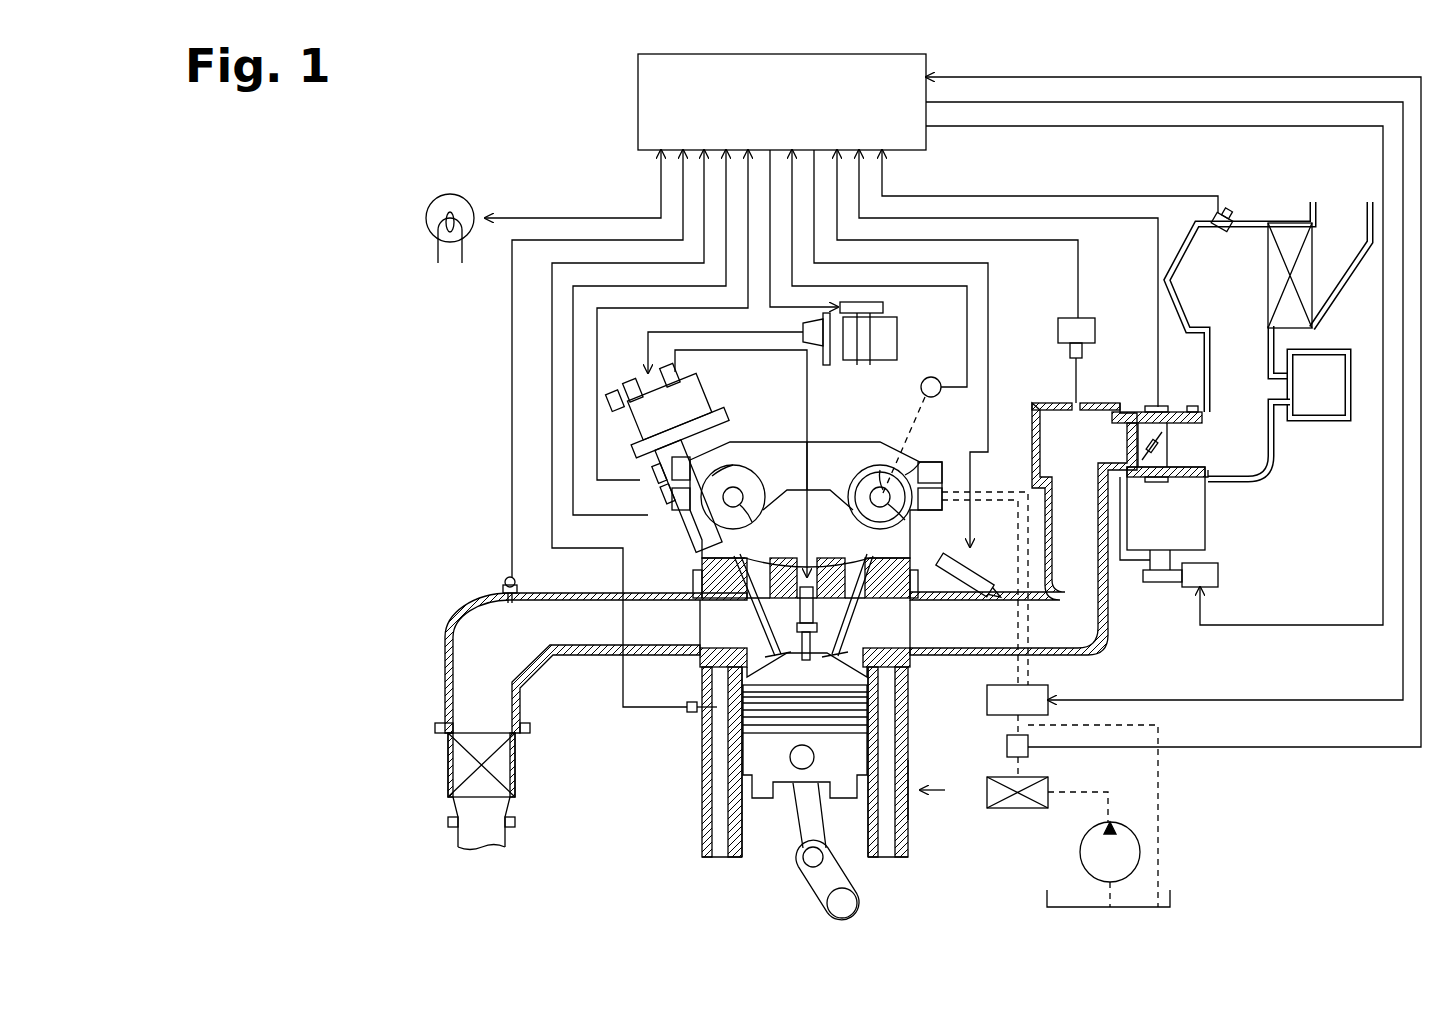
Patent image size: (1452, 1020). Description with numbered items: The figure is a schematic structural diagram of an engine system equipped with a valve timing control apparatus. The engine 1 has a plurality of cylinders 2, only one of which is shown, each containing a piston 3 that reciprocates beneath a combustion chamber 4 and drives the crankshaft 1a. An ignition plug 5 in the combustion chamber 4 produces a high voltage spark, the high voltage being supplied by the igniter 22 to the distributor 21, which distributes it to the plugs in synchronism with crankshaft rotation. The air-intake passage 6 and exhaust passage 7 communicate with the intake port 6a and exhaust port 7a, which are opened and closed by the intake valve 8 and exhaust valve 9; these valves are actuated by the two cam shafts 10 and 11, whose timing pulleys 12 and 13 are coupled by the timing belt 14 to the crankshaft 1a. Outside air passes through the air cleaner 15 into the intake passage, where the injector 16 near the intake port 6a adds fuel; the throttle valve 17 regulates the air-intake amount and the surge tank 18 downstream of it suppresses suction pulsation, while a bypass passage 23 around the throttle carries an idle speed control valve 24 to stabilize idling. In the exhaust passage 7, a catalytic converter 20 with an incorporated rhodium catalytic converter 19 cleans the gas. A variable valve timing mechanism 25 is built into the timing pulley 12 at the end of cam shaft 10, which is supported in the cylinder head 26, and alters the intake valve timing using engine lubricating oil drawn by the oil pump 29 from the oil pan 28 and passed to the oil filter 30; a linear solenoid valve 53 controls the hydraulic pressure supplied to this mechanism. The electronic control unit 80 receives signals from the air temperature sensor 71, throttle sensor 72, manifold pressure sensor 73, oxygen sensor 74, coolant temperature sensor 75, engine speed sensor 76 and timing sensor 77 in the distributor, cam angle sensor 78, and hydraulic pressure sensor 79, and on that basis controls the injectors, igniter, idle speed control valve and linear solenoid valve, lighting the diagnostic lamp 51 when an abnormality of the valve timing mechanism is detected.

The engine 1 is at (941, 790).
The crankshaft 1a is at (860, 905).
The cylinder 2 is at (715, 830).
The piston 3 is at (760, 770).
The combustion chamber 4 is at (895, 712).
The ignition plug 5 is at (812, 580).
The air-intake passage 6 is at (1090, 640).
The intake port 6a is at (925, 655).
The exhaust passage 7 is at (570, 593).
The exhaust port 7a is at (710, 640).
The intake valve 8 is at (860, 640).
The exhaust valve 9 is at (748, 640).
The cam shaft 10 is at (912, 520).
The cam shaft 11 is at (752, 512).
The timing pulley 12 is at (903, 460).
The timing pulley 13 is at (740, 458).
The timing belt 14 is at (818, 440).
The air cleaner 15 is at (1312, 268).
The injector 16 is at (970, 554).
The throttle valve 17 is at (1165, 436).
The surge tank 18 is at (1038, 402).
The rhodium catalytic converter 19 is at (512, 792).
The catalytic converter 20 is at (518, 770).
The distributor 21 is at (712, 402).
The igniter 22 is at (900, 328).
The bypass passage 23 is at (1210, 525).
The idle speed control valve 24 is at (1222, 578).
The variable valve timing mechanism 25 is at (872, 462).
The cylinder head 26 is at (700, 572).
The oil pan 28 is at (1170, 898).
The oil pump 29 is at (1082, 880).
The oil filter 30 is at (1018, 812).
The diagnostic lamp 51 is at (452, 194).
The linear solenoid valve 53 is at (1045, 683).
The air temperature sensor 71 is at (1228, 212).
The throttle sensor 72 is at (1148, 406).
The manifold pressure sensor 73 is at (1058, 332).
The oxygen sensor 74 is at (505, 584).
The coolant temperature sensor 75 is at (688, 718).
The engine speed sensor 76 is at (640, 492).
The timing sensor 77 is at (652, 524).
The cam angle sensor 78 is at (932, 377).
The hydraulic pressure sensor 79 is at (1007, 747).
The electronic control unit 80 is at (638, 96).